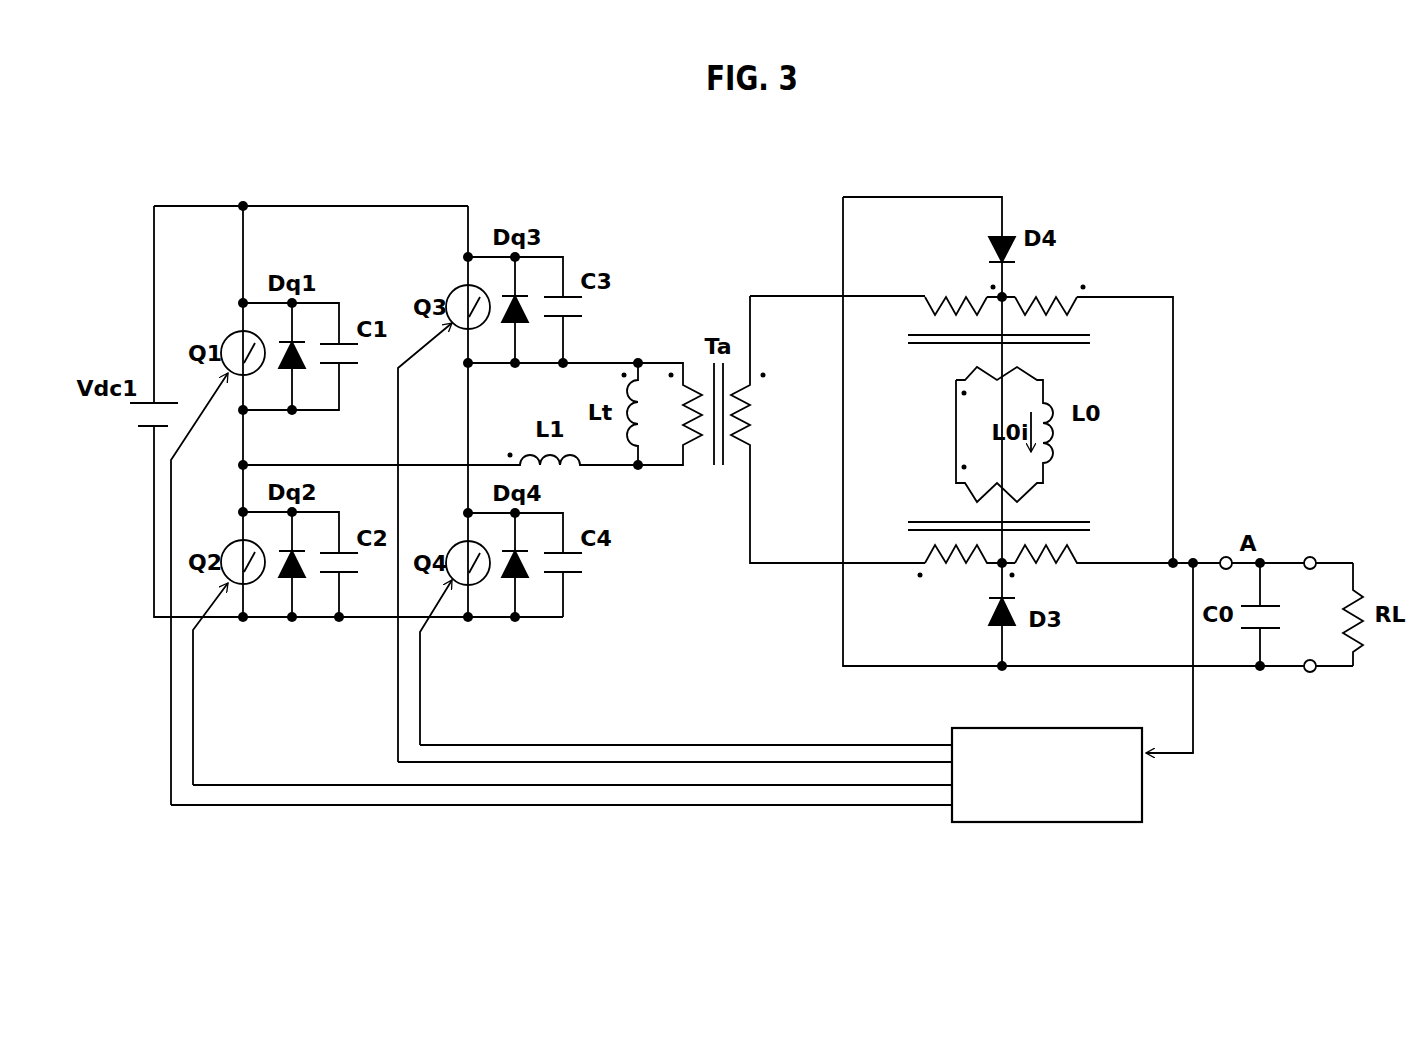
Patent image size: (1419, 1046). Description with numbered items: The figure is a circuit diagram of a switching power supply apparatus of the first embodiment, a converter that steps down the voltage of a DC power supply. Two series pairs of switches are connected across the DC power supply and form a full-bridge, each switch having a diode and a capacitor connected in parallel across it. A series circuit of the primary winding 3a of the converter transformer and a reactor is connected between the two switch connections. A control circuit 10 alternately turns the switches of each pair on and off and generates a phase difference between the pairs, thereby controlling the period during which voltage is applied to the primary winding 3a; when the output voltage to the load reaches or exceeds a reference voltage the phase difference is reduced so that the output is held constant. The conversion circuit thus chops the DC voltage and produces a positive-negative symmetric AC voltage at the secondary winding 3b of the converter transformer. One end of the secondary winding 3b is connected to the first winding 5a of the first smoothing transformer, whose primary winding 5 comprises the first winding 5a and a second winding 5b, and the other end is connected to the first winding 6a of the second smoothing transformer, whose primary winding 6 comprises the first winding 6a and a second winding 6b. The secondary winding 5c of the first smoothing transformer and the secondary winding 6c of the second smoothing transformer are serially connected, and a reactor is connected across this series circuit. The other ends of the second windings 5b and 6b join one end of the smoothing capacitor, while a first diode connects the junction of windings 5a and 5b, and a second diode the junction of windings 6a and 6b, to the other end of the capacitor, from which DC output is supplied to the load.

The primary winding 3a is at (664, 392).
The secondary winding 3b is at (768, 448).
The primary winding 5 is at (1015, 349).
The first winding 5a is at (972, 290).
The second winding 5b is at (1030, 290).
The secondary winding 5c is at (975, 385).
The primary winding 6 is at (1112, 545).
The first winding 6a is at (940, 574).
The second winding 6b is at (1069, 567).
The secondary winding 6c is at (1022, 475).
The control circuit 10 is at (1113, 822).